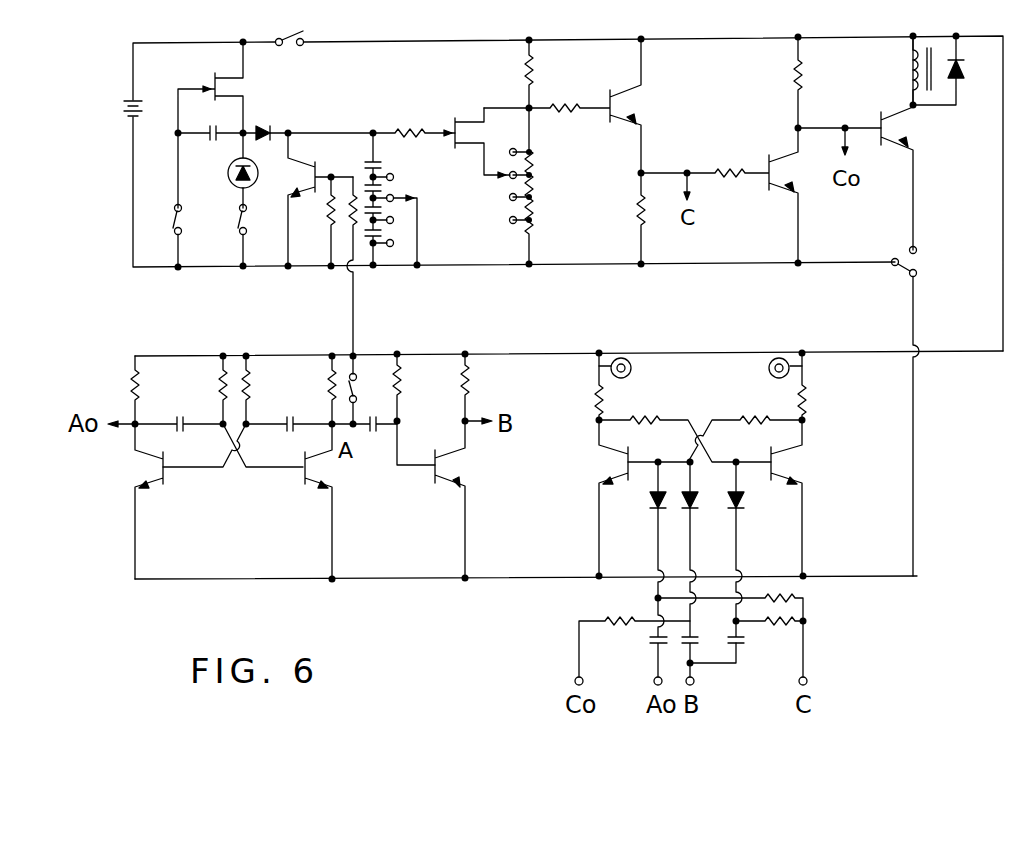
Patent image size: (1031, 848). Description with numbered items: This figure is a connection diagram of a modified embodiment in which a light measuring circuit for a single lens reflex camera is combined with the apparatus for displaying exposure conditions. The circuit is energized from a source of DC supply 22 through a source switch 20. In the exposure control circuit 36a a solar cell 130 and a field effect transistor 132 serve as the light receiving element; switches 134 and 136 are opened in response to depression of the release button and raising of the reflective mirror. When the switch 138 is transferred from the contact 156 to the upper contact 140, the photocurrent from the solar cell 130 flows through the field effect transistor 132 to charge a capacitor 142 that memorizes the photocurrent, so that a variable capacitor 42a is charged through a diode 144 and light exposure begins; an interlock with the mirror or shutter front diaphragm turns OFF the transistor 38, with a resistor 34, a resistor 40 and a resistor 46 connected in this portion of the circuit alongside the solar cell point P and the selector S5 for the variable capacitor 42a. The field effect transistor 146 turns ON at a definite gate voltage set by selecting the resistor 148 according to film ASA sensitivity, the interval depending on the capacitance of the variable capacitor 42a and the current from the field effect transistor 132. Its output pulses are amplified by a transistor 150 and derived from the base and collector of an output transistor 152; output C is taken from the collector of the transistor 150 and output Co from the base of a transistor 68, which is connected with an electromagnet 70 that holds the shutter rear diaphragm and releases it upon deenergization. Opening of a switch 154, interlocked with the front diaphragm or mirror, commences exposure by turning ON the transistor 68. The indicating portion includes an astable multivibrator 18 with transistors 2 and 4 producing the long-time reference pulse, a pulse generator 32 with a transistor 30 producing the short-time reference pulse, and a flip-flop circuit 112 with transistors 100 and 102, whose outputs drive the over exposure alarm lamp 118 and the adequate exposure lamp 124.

The transistor 2 is at (149, 501).
The transistor 4 is at (318, 501).
The astable multivibrator 18 is at (246, 507).
The source switch 20 is at (283, 28).
The source of DC supply 22 is at (121, 124).
The transistor 30 is at (466, 499).
The pulse generator 32 is at (440, 437).
The resistor 34 is at (354, 188).
The exposure control circuit 36a is at (358, 114).
The transistor 38 is at (320, 199).
The resistor 40 is at (316, 221).
The variable capacitor 42a is at (403, 199).
The resistor 46 is at (414, 113).
The transistor 68 is at (914, 143).
The electromagnet 70 is at (922, 70).
The transistor 100 is at (603, 498).
The transistor 102 is at (809, 498).
The flip-flop circuit 112 is at (712, 408).
The over exposure condition alarm indicating lamp 118 is at (638, 372).
The adequate exposure condition indicating lamp 124 is at (765, 372).
The solar cell 130 is at (258, 180).
The field effect transistor 132 is at (210, 125).
The switch 134 is at (248, 220).
The switch 136 is at (201, 233).
The switch 138 is at (917, 266).
The upper contact 140 is at (917, 253).
The capacitor 142 is at (210, 121).
The diode 144 is at (269, 121).
The field effect transistor 146 is at (475, 129).
The resistor 148 is at (546, 152).
The transistor 150 is at (587, 151).
The output transistor 152 is at (773, 186).
The switch 154 is at (374, 390).
The contact 156 is at (910, 276).
The test point P is at (226, 173).
The selector switch S5 is at (421, 230).